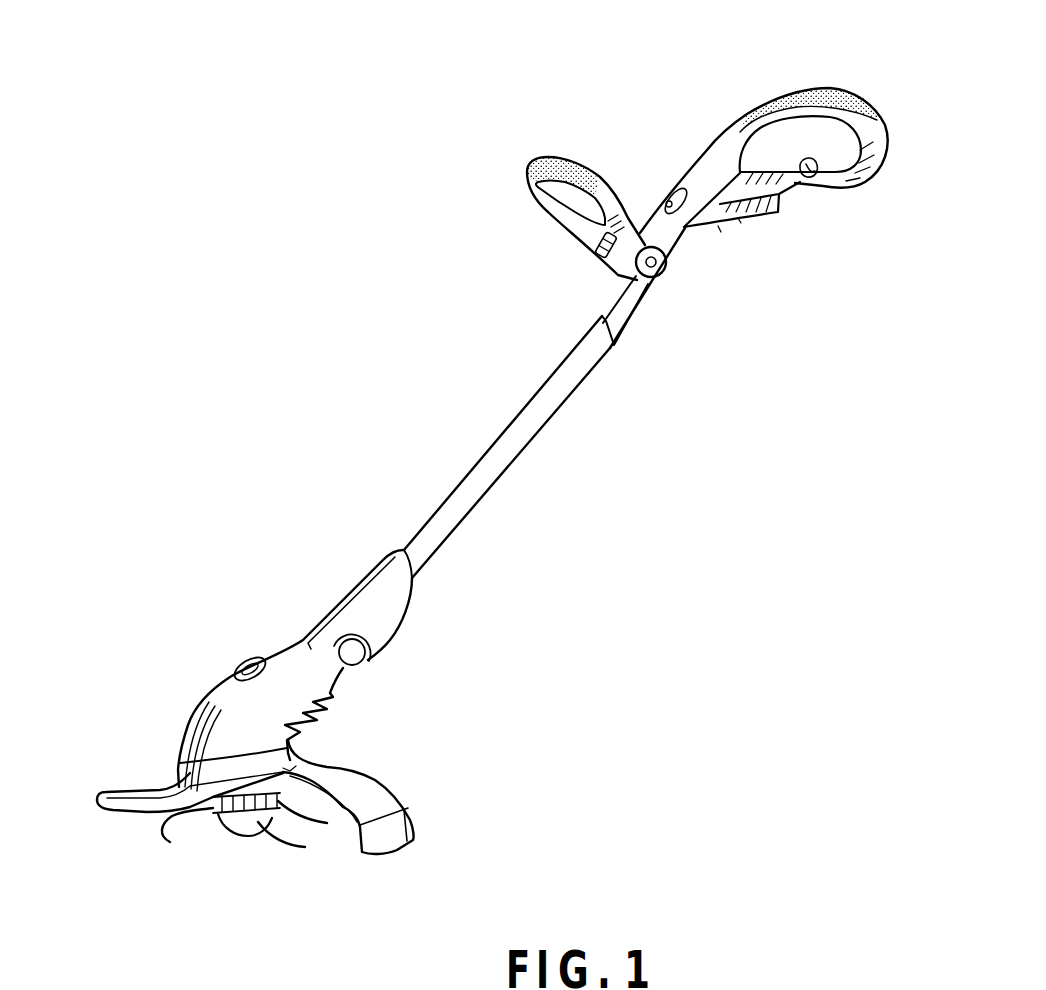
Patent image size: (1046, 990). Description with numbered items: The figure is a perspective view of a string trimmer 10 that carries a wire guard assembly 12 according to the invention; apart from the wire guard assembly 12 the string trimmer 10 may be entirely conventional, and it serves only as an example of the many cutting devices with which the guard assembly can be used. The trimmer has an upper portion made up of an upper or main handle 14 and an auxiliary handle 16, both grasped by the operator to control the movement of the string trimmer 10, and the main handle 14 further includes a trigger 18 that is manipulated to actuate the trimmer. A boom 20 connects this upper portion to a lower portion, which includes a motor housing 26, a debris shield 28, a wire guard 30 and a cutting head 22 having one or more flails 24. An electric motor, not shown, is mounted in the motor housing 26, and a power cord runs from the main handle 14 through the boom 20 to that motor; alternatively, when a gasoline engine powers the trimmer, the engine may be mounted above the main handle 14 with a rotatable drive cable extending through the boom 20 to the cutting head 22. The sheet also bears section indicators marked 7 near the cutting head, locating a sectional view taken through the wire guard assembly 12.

The string trimmer 10 is at (335, 302).
The wire guard assembly 12 is at (170, 762).
The main handle 14 is at (877, 120).
The auxiliary handle 16 is at (560, 163).
The trigger 18 is at (825, 172).
The boom 20 is at (462, 490).
The cutting head 22 is at (252, 840).
The flails 24 is at (168, 843).
The motor housing 26 is at (290, 663).
The debris shield 28 is at (389, 830).
The wire guard 30 is at (133, 812).
The section line 7- 7 is at (75, 808).